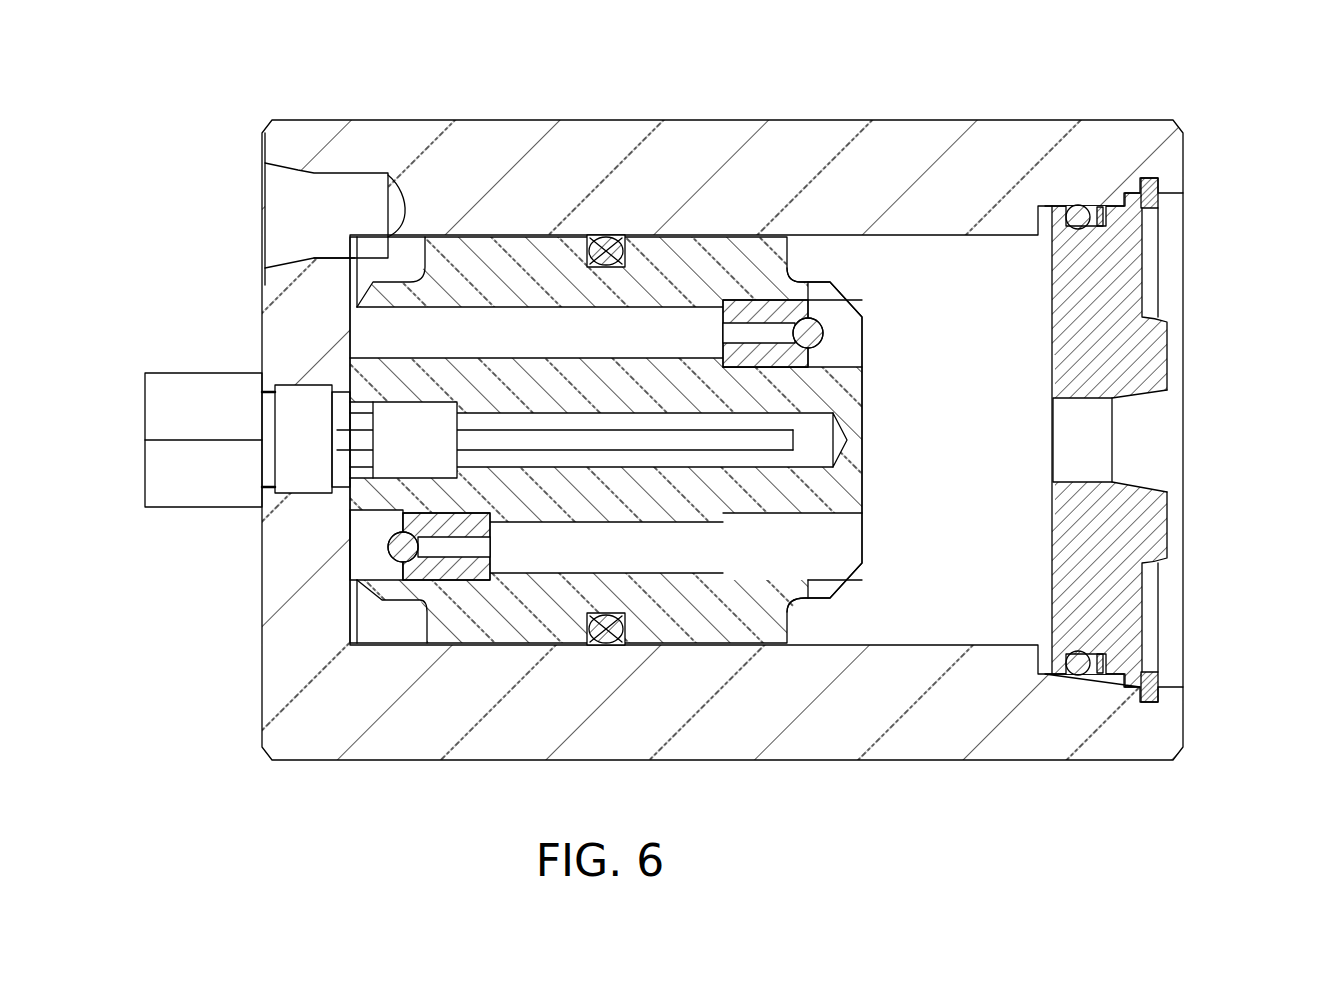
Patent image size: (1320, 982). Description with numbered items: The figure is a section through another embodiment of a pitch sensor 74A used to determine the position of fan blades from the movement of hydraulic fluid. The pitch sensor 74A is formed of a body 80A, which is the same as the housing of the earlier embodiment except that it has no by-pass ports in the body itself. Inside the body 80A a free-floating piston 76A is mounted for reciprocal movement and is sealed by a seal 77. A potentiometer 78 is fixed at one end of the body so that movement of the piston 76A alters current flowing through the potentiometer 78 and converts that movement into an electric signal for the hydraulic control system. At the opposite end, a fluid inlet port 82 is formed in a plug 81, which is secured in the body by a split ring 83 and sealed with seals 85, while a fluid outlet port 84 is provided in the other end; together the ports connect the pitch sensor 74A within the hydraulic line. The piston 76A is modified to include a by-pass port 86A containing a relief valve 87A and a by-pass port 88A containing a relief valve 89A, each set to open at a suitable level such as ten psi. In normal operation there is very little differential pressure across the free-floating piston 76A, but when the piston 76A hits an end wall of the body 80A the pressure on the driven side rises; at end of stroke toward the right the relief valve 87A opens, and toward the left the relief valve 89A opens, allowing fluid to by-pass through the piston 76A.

The pitch sensor 74A is at (913, 118).
The body 80A is at (503, 147).
The piston 76A is at (723, 247).
The seal 77 is at (613, 237).
The potentiometer 78 is at (388, 468).
The plug 81 is at (1120, 303).
The fluid inlet port 82 is at (1148, 432).
The split ring 83 is at (1160, 185).
The fluid outlet port 84 is at (285, 207).
The seals 85 is at (1080, 205).
The by-pass port 86A is at (847, 318).
The relief valve 87A is at (770, 313).
The by-pass port 88A is at (367, 565).
The relief valve 89A is at (407, 570).